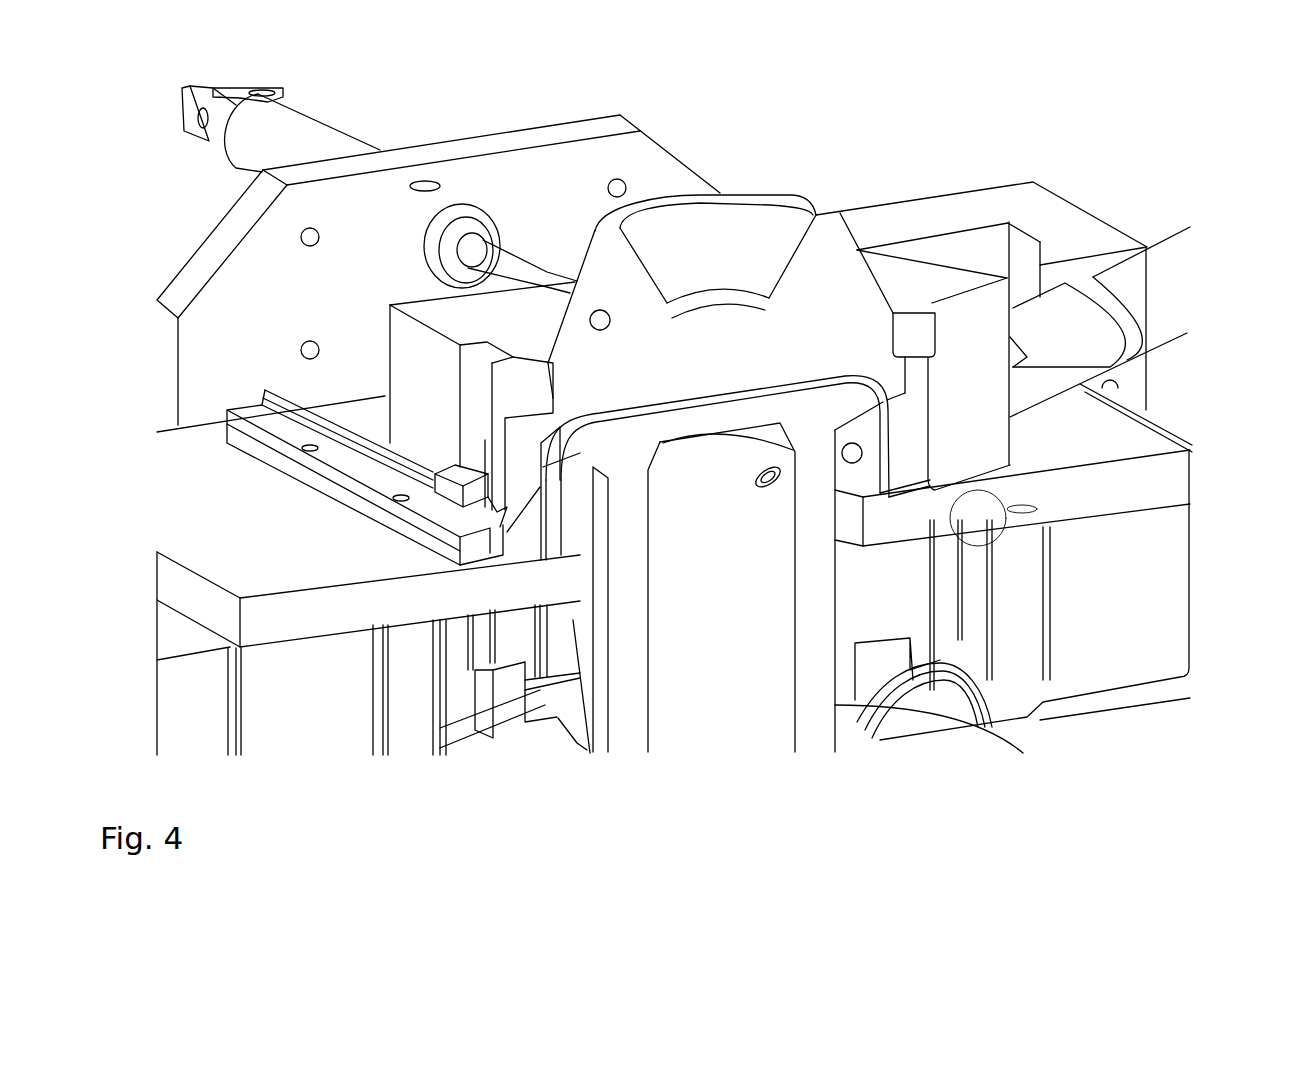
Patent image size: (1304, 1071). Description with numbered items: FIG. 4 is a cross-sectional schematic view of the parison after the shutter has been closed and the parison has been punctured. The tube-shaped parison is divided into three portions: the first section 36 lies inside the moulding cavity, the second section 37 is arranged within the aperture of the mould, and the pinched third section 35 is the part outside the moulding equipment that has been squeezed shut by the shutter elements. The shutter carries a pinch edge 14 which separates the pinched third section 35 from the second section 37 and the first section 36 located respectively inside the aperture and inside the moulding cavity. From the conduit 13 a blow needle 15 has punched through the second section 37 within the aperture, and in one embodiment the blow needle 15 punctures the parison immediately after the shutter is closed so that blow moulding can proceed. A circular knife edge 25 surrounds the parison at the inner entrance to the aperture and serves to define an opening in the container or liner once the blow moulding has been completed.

The conduit 13 is at (1073, 333).
The pinch edge 14 is at (843, 377).
The blow needle 15 is at (778, 485).
The circular knife edge 25 is at (835, 720).
The pinched third section 35 is at (808, 295).
The first section 36 is at (815, 737).
The second section 37 is at (813, 580).